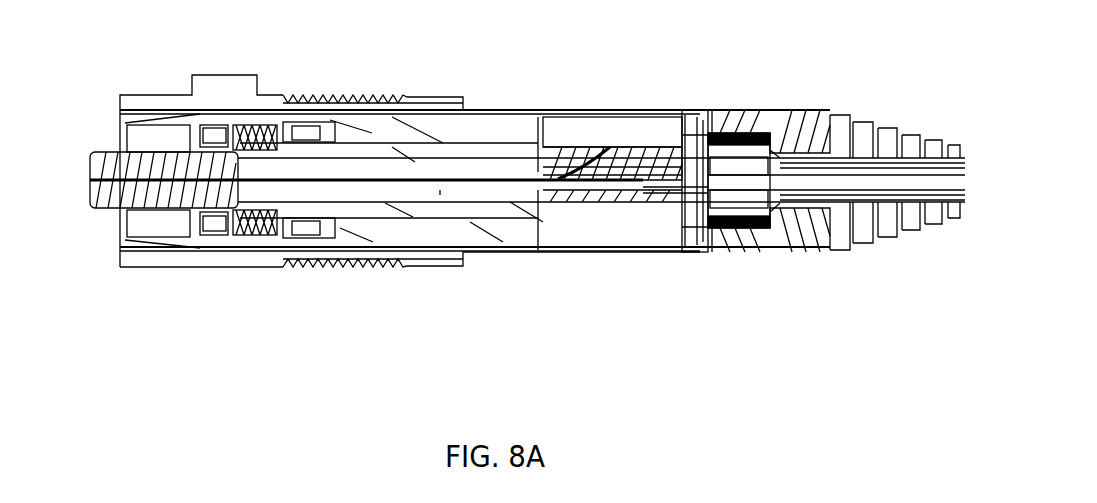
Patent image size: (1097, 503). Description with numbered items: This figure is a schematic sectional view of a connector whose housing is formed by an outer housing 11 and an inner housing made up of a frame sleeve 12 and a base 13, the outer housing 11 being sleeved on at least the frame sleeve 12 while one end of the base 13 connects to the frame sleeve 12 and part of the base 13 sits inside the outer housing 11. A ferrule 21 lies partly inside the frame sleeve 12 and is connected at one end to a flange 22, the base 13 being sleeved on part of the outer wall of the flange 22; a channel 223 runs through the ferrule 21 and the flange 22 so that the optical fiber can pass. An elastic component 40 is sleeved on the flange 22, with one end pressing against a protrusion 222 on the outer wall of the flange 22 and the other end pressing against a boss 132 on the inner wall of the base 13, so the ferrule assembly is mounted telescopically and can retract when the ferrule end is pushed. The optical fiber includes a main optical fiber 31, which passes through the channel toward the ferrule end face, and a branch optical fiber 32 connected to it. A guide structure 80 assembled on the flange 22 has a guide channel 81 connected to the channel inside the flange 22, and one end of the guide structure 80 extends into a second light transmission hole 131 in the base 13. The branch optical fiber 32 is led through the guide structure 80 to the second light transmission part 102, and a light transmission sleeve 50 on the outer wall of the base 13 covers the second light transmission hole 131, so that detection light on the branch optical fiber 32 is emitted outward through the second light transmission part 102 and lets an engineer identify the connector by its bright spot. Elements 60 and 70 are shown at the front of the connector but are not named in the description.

The outer housing 11 is at (312, 99).
The frame sleeve 12 is at (135, 120).
The base 13 is at (432, 127).
The ferrule 21 is at (107, 163).
The flange 22 is at (347, 210).
The main optical fiber 31 is at (500, 192).
The branch optical fiber 32 is at (595, 162).
The elastic component 40 is at (260, 137).
The light transmission sleeve 50 is at (487, 110).
The coupling member 60 is at (755, 132).
The tapered tip 70 is at (782, 127).
The guide structure 80 is at (665, 160).
The guide channel 81 is at (627, 188).
The second light transmission part 102 is at (623, 104).
The second light transmission hole 131 is at (655, 140).
The boss 132 is at (280, 232).
The protrusion 222 is at (232, 238).
The channel 223 is at (445, 192).